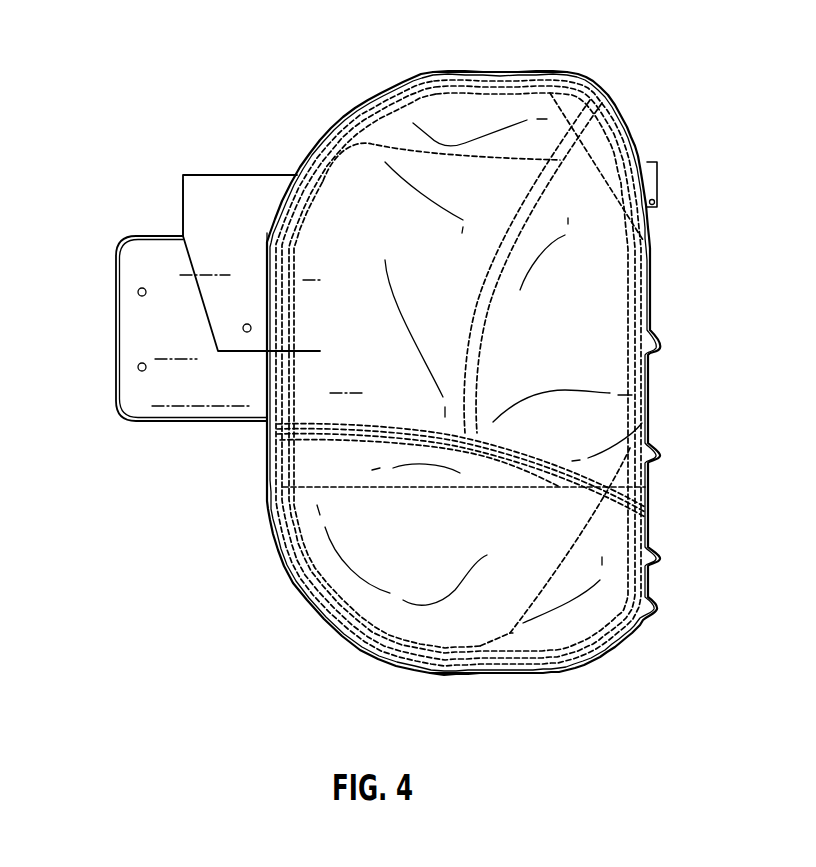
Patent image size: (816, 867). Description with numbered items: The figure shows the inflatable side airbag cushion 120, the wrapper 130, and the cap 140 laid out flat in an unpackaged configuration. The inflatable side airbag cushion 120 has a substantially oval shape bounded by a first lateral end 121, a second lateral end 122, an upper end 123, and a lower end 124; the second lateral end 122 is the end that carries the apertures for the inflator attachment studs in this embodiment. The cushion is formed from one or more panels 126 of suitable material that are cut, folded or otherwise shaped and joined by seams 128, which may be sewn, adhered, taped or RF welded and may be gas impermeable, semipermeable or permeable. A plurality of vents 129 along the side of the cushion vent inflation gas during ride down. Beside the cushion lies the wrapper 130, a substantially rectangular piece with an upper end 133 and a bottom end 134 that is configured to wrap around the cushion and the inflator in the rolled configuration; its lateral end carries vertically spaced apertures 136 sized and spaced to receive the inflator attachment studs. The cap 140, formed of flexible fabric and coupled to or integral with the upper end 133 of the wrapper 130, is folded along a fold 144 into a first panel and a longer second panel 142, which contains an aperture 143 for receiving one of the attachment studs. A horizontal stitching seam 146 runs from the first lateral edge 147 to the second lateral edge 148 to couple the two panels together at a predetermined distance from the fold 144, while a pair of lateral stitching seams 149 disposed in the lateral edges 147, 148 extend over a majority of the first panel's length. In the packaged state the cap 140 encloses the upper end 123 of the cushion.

The inflatable side airbag cushion 120 is at (630, 378).
The first lateral end 121 is at (652, 332).
The second lateral end 122 is at (507, 172).
The upper end 123 is at (487, 72).
The lower end 124 is at (520, 675).
The panels 126 is at (650, 173).
The seams 128 is at (482, 284).
The vents 129 is at (637, 413).
The wrapper 130 is at (162, 421).
The upper end 133 is at (147, 236).
The bottom end 134 is at (207, 422).
The apertures 136 is at (138, 292).
The cap 140 is at (210, 173).
The second panel 142 is at (270, 207).
The aperture 143 is at (243, 328).
The fold 144 is at (213, 207).
The horizontal stitching seam 146 is at (243, 190).
The first lateral edge 147 is at (303, 193).
The second lateral edge 148 is at (183, 232).
The lateral stitching seams 149 is at (190, 207).